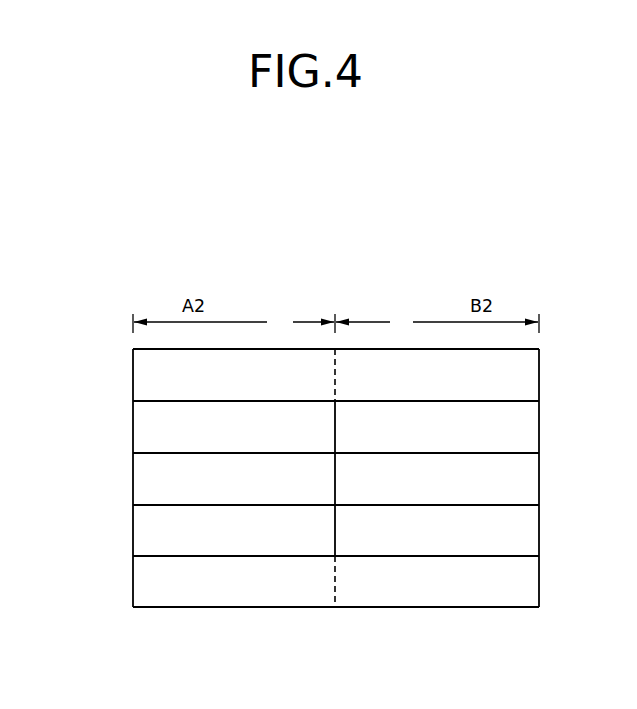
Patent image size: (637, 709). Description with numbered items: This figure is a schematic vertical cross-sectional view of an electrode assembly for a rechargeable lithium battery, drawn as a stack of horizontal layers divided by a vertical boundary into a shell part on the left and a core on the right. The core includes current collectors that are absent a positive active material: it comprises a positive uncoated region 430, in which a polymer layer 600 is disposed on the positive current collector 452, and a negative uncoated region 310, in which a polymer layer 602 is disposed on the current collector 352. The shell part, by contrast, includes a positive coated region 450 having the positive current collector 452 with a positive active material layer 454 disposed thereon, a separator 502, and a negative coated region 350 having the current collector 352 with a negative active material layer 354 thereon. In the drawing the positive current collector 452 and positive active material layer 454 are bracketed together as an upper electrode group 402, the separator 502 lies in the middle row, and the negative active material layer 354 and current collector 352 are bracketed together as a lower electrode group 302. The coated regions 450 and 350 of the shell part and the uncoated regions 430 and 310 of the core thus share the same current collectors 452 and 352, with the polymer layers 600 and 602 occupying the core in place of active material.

The positive coated region 450 is at (284, 337).
The positive uncoated region 430 is at (403, 337).
The upper electrode structure 402 is at (281, 401).
The positive current collector 452 is at (133, 375).
The positive active material layer 454 is at (304, 427).
The separator 502 is at (133, 481).
The lower electrode structure 302 is at (281, 556).
The negative active material layer 354 is at (133, 532).
The current collector 352 is at (304, 581).
The polymer layer 600 is at (513, 431).
The polymer layer 602 is at (513, 529).
The negative coated region 350 is at (246, 622).
The negative uncoated region 310 is at (437, 622).